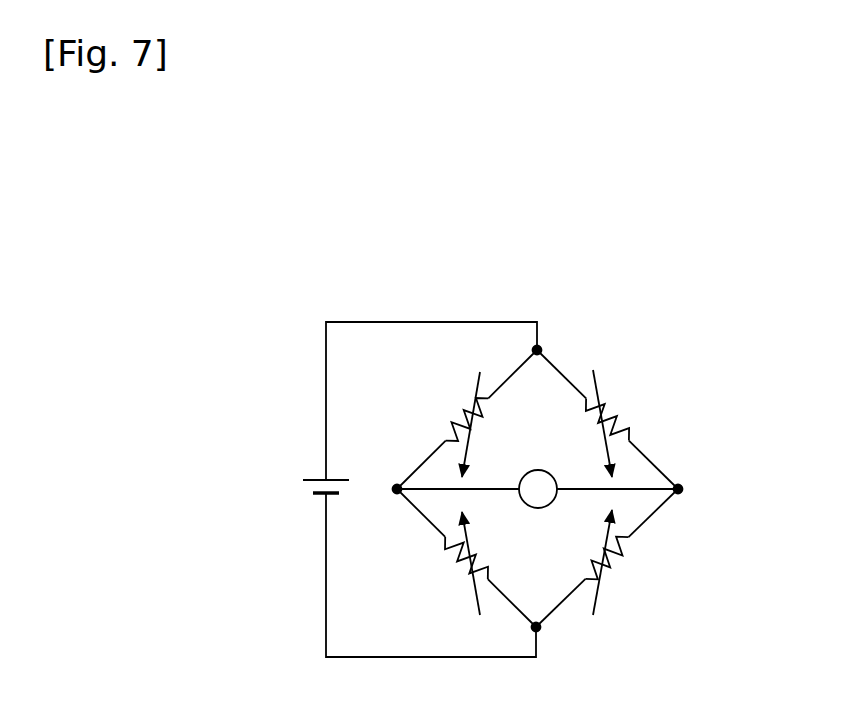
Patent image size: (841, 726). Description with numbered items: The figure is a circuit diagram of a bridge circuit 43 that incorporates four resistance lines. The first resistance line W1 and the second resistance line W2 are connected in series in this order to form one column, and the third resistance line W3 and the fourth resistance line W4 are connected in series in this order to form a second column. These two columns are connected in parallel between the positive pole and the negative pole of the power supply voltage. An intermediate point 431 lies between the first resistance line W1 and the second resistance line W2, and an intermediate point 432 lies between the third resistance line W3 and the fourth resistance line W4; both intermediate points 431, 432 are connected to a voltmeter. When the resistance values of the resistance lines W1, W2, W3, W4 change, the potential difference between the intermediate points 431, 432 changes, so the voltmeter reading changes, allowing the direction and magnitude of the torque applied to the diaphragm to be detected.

The bridge circuit 43 is at (548, 448).
The intermediate point 431 is at (384, 503).
The intermediate point 432 is at (692, 504).
The first resistance line W1 is at (455, 424).
The second resistance line W2 is at (456, 563).
The third resistance line W3 is at (616, 423).
The fourth resistance line W4 is at (616, 562).